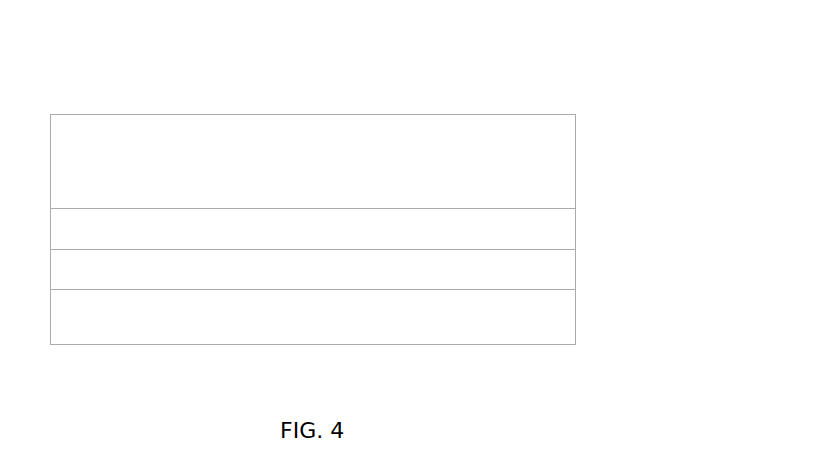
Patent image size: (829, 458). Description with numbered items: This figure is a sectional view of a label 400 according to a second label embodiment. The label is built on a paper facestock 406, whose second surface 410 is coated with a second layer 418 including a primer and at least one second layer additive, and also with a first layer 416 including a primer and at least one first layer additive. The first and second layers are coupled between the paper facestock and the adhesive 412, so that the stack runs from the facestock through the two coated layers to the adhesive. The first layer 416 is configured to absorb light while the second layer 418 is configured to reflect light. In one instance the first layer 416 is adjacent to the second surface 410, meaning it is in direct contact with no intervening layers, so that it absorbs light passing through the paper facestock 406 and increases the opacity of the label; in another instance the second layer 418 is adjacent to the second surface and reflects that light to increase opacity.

The label 400 is at (625, 105).
The paper facestock 406 is at (558, 166).
The second layer 418 is at (561, 230).
The first layer 416 is at (556, 272).
The adhesive 412 is at (556, 318).
The second surface 410 is at (467, 211).